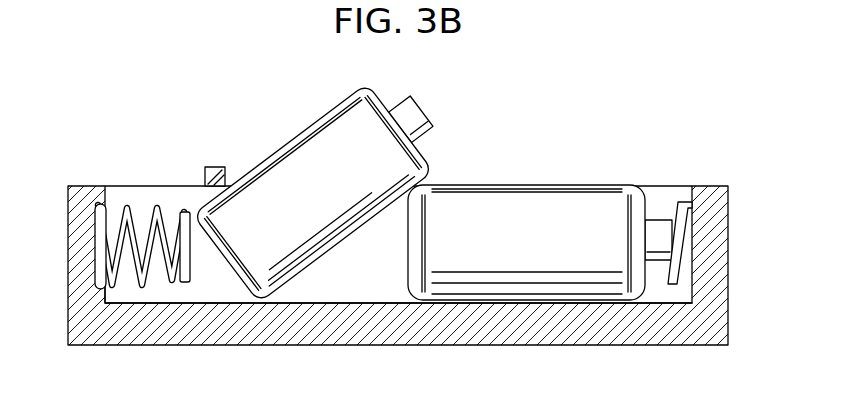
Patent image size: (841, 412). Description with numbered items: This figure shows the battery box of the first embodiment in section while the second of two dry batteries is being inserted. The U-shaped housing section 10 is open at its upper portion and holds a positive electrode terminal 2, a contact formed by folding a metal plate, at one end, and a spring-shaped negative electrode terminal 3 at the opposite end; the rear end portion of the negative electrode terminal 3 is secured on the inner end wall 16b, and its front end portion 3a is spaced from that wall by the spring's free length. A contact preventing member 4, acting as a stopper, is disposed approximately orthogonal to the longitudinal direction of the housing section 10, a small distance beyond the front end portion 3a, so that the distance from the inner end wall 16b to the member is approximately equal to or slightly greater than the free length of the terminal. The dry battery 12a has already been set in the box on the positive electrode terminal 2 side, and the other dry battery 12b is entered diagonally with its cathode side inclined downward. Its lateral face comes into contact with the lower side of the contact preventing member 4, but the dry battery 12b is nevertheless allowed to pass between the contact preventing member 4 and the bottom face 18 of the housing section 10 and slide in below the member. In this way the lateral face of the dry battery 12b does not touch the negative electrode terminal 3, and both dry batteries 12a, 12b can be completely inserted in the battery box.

The housing section 10 is at (718, 223).
The inner end wall 16b is at (115, 303).
The bottom face 18 is at (345, 298).
The negative electrode terminal 3 is at (128, 218).
The front end portion 3a is at (183, 217).
The contact preventing member 4 is at (210, 168).
The dry battery 12b is at (305, 127).
The dry battery 12a is at (530, 197).
The positive electrode terminal 2 is at (682, 202).